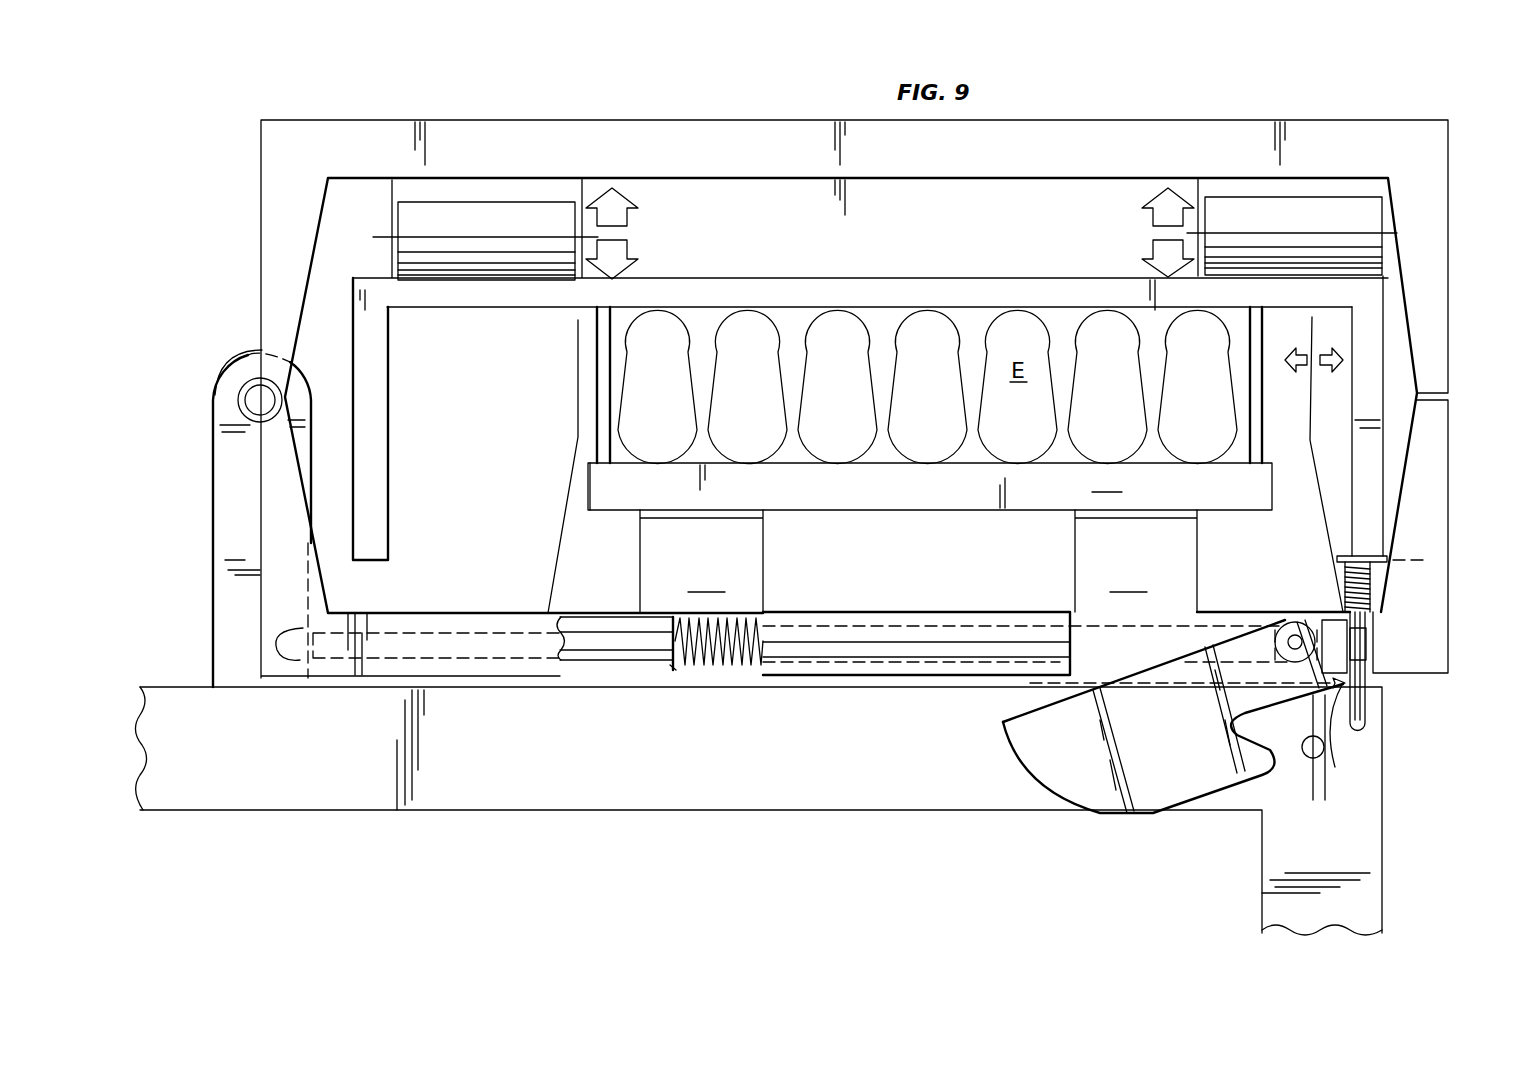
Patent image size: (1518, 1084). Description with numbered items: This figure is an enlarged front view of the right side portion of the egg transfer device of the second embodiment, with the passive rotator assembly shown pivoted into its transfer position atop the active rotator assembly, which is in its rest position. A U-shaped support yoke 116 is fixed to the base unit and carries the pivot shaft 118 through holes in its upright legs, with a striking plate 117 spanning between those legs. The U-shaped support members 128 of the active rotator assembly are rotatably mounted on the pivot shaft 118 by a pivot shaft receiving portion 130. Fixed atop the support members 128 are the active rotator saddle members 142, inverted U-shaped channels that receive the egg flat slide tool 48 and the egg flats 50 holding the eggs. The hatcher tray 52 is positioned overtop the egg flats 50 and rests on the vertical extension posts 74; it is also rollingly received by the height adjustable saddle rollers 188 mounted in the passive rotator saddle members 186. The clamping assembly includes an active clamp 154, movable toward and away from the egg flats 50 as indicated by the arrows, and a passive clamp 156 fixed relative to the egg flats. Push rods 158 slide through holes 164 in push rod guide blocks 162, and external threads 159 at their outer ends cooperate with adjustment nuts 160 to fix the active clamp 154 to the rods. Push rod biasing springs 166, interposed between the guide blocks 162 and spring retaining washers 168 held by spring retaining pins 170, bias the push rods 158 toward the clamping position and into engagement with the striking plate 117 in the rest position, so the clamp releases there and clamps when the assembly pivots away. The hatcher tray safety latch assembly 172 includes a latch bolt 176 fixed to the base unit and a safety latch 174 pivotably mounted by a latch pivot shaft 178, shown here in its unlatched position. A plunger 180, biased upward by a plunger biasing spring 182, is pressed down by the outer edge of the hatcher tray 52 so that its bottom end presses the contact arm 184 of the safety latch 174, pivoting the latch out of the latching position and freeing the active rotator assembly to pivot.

The egg flat slide tool 48 is at (583, 493).
The egg flats 50 is at (930, 486).
The hatcher tray 52 is at (852, 300).
The vertical extension posts 74 is at (1262, 425).
The support yoke 116 is at (230, 545).
The striking plate 117 is at (277, 637).
The pivot shaft 118 is at (257, 392).
The U-shaped support members 128 is at (268, 627).
The pivot shaft receiving portion 130 is at (250, 418).
The active rotator saddle members 142 is at (918, 561).
The active clamp 154 is at (1312, 405).
The passive clamp 156 is at (575, 398).
The push rods 158 is at (622, 648).
The external threads 159 is at (1363, 640).
The adjustment nuts 160 is at (1335, 625).
The push rod guide blocks 162 is at (870, 667).
The holes 164 is at (932, 658).
The push rod biasing springs 166 is at (733, 665).
The spring retaining washers 168 is at (673, 667).
The spring retaining pins 170 is at (668, 642).
The hatcher tray safety latch assembly 172 is at (1392, 742).
The safety latch 174 is at (1100, 762).
The latch bolt 176 is at (1305, 752).
The latch pivot shaft 178 is at (1290, 632).
The plunger 180 is at (1366, 700).
The plunger biasing spring 182 is at (1367, 593).
The contact arm 184 is at (1336, 710).
The passive rotator saddle members 186 is at (587, 187).
The saddle rollers 188 is at (420, 222).